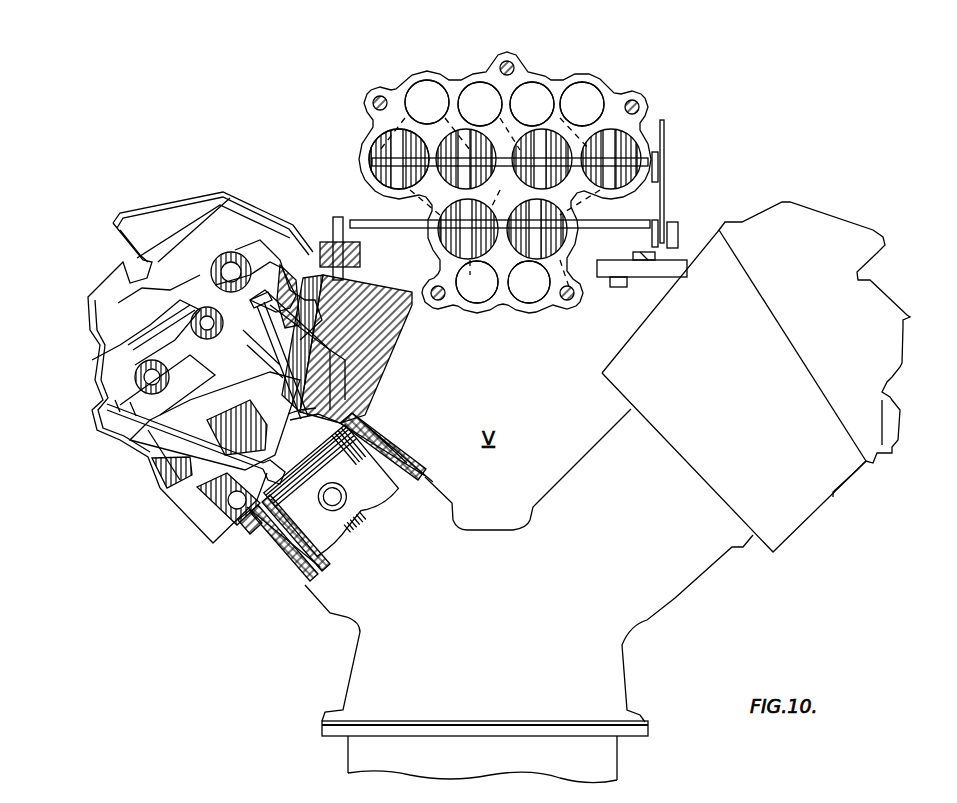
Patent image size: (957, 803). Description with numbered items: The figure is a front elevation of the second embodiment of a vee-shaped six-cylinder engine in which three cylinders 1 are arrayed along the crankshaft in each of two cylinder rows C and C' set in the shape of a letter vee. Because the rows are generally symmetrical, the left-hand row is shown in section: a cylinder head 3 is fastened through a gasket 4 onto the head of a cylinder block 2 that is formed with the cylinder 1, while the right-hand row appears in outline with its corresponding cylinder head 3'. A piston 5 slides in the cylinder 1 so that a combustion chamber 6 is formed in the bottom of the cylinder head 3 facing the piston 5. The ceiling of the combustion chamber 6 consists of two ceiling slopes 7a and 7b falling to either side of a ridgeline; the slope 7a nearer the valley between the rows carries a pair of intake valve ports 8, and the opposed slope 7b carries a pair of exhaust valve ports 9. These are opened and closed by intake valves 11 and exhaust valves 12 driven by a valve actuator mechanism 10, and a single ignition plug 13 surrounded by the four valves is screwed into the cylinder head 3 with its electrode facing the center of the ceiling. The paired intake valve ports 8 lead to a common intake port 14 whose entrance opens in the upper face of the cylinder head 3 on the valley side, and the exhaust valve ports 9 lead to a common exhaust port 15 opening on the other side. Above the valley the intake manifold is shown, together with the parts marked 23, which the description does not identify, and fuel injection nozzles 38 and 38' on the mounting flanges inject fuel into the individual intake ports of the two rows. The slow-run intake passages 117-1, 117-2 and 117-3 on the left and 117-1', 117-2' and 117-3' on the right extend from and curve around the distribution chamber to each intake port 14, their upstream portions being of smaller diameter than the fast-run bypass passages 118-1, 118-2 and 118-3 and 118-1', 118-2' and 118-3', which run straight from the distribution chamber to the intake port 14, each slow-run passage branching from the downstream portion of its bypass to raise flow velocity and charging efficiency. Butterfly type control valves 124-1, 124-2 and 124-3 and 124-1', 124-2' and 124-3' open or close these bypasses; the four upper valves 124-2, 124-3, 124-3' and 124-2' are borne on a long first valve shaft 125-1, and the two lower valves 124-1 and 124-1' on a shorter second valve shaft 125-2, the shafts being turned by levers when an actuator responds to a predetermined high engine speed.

The cylinder 1 is at (283, 567).
The cylinder block 2 is at (402, 432).
The cylinder head 3 is at (347, 349).
The cylinder head 3' is at (752, 377).
The gasket 4 is at (362, 410).
The piston 5 is at (331, 491).
The combustion chamber 6 is at (329, 495).
The ceiling slope 7a is at (335, 472).
The ceiling slope 7b is at (250, 530).
The intake valve ports 8 is at (318, 420).
The exhaust valve ports 9 is at (262, 476).
The valve actuator mechanism 10 is at (205, 255).
The intake valves 11 is at (288, 372).
The exhaust valves 12 is at (205, 458).
The ignition plug 13 is at (208, 385).
The intake port 14 is at (372, 335).
The exhaust port 15 is at (177, 503).
The bolt holes 23 is at (378, 96).
The fuel injection nozzle 38 is at (329, 241).
The fuel injection nozzle 38' is at (656, 254).
The first intake passage 117-1 is at (472, 301).
The first intake passage 117-1' is at (523, 301).
The second intake passage 117-2 is at (476, 83).
The second intake passage 117-2' is at (541, 83).
The third intake passage 117-3 is at (426, 82).
The third intake passage 117-3' is at (592, 83).
The first bypass passage 118-1 is at (477, 282).
The first bypass passage 118-1' is at (530, 282).
The second bypass passage 118-2 is at (480, 104).
The second bypass passage 118-2' is at (533, 104).
The third bypass passage 118-3 is at (366, 158).
The third bypass passage 118-3' is at (638, 141).
The butterfly type control valve 124-1 is at (433, 229).
The butterfly type control valve 124-1' is at (567, 265).
The butterfly type control valve 124-2 is at (428, 102).
The butterfly type control valve 124-2' is at (582, 104).
The butterfly type control valve 124-3 is at (367, 160).
The butterfly type control valve 124-3' is at (684, 181).
The first valve shaft 125-1 is at (658, 160).
The second valve shaft 125-2 is at (656, 222).
The cylinder row C is at (243, 160).
The cylinder row C' is at (833, 149).